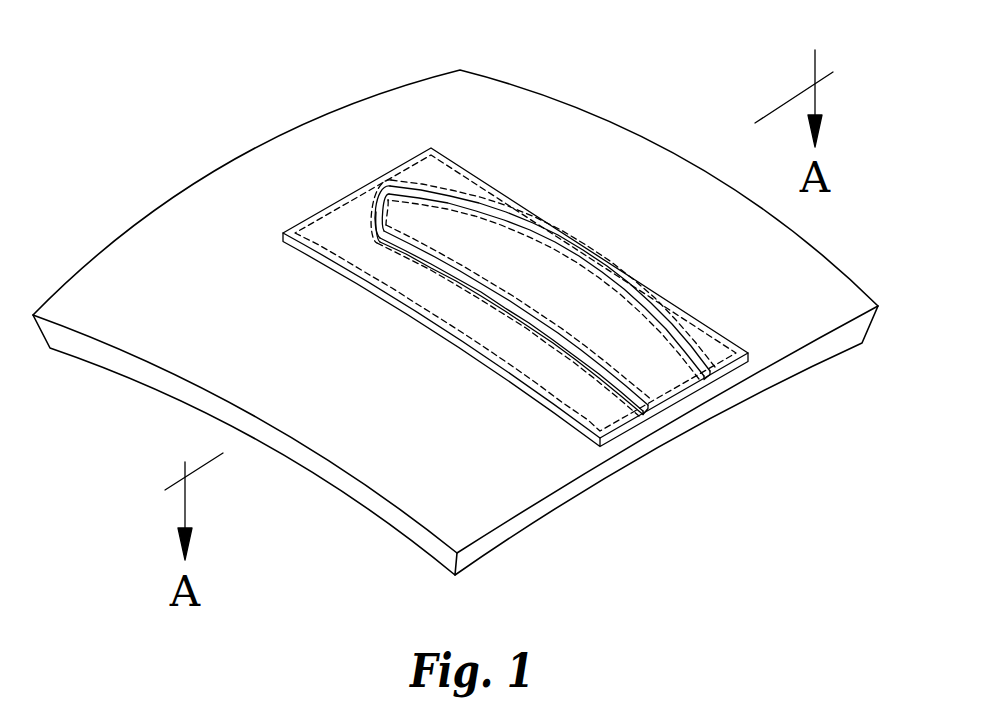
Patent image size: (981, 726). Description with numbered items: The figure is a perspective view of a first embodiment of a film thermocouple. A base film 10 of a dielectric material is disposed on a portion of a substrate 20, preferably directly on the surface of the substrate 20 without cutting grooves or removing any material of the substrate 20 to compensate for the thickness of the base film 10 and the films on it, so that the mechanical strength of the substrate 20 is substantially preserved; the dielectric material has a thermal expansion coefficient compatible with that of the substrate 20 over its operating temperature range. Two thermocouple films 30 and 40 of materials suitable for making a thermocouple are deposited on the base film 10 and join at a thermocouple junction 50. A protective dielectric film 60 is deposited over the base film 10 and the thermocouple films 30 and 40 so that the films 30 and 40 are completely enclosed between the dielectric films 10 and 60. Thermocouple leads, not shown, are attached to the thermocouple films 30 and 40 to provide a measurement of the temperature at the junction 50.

The base film 10 is at (740, 372).
The substrate 20 is at (830, 345).
The thermocouple film 30 is at (610, 385).
The thermocouple film 40 is at (677, 335).
The thermocouple junction 50 is at (355, 213).
The protective dielectric film 60 is at (480, 168).